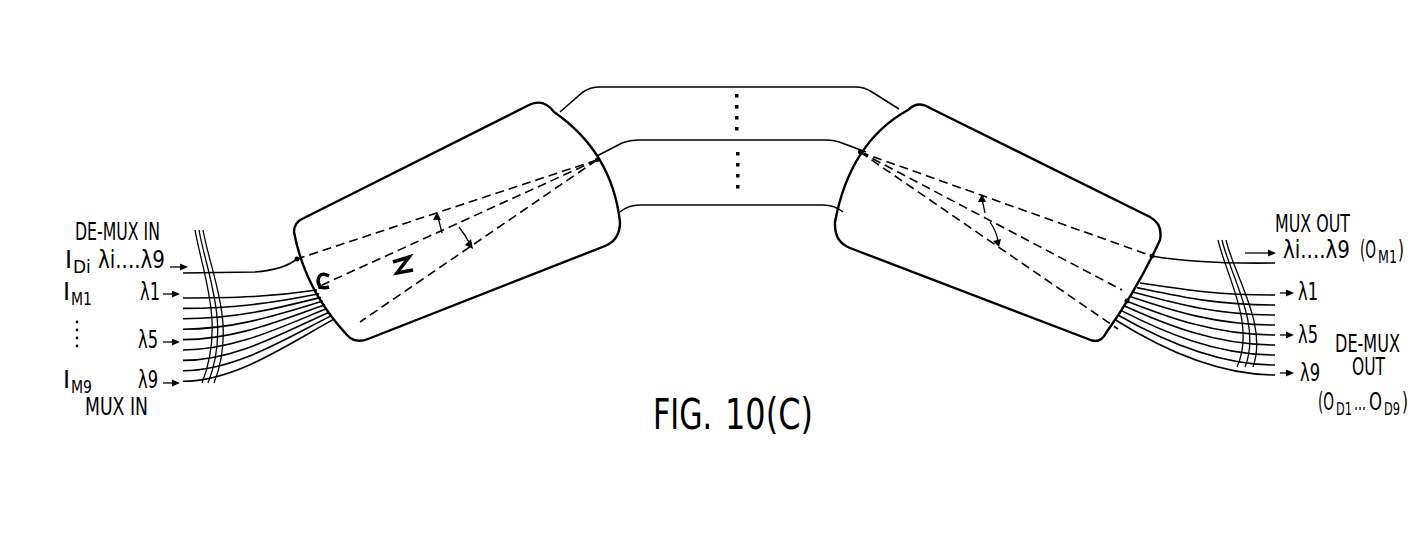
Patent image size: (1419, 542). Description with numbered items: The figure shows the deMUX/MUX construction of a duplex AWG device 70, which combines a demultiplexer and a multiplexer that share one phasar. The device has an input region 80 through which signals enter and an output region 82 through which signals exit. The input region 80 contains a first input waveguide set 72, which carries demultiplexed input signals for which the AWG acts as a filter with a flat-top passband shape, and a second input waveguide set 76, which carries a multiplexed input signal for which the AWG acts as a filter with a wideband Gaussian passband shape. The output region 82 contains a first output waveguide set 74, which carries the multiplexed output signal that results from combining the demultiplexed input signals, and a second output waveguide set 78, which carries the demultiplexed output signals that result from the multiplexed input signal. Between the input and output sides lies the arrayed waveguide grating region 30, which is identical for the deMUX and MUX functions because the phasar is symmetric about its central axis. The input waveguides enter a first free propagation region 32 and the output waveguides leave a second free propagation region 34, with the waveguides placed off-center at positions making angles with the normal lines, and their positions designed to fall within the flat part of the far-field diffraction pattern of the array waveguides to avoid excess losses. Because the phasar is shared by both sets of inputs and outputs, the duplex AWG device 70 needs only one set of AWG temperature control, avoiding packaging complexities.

The arrayed waveguide grating region 30 is at (731, 117).
The input slab waveguide (free propagation region) 32 is at (546, 153).
The output slab waveguide (free propagation region) 34 is at (946, 153).
The duplex AWG device 70 is at (1268, 167).
The first input waveguide set 72 is at (205, 294).
The first output waveguide set 74 is at (1195, 257).
The second input waveguide set 76 is at (264, 270).
The second output waveguide set 78 is at (1237, 290).
The input region 80 is at (260, 356).
The output region 82 is at (1194, 350).